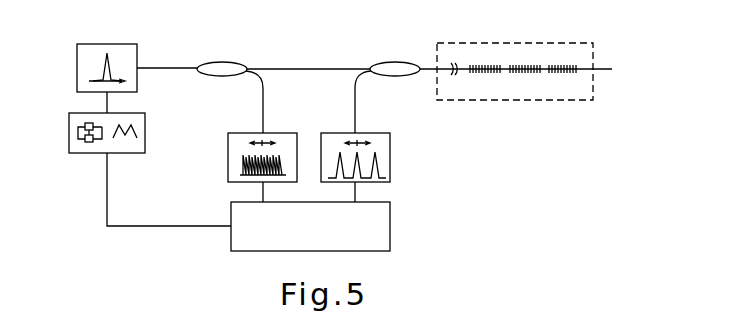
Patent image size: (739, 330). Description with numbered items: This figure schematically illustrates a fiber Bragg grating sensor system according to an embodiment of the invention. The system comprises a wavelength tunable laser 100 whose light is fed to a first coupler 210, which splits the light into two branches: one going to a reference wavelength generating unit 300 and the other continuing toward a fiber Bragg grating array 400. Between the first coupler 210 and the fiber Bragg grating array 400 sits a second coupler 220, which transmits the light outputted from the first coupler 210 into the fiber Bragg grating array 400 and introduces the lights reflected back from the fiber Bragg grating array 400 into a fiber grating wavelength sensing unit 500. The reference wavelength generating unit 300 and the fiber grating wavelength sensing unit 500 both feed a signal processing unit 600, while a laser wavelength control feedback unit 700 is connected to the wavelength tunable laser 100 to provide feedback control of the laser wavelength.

The wavelength tunable laser 100 is at (77, 44).
The first coupler 210 is at (222, 62).
The second coupler 220 is at (395, 62).
The reference wavelength generating unit 300 is at (228, 133).
The fiber Bragg grating array 400 is at (593, 43).
The fiber grating wavelength sensing unit 500 is at (389, 133).
The signal processing unit 600 is at (390, 228).
The laser wavelength control feedback unit 700 is at (69, 113).